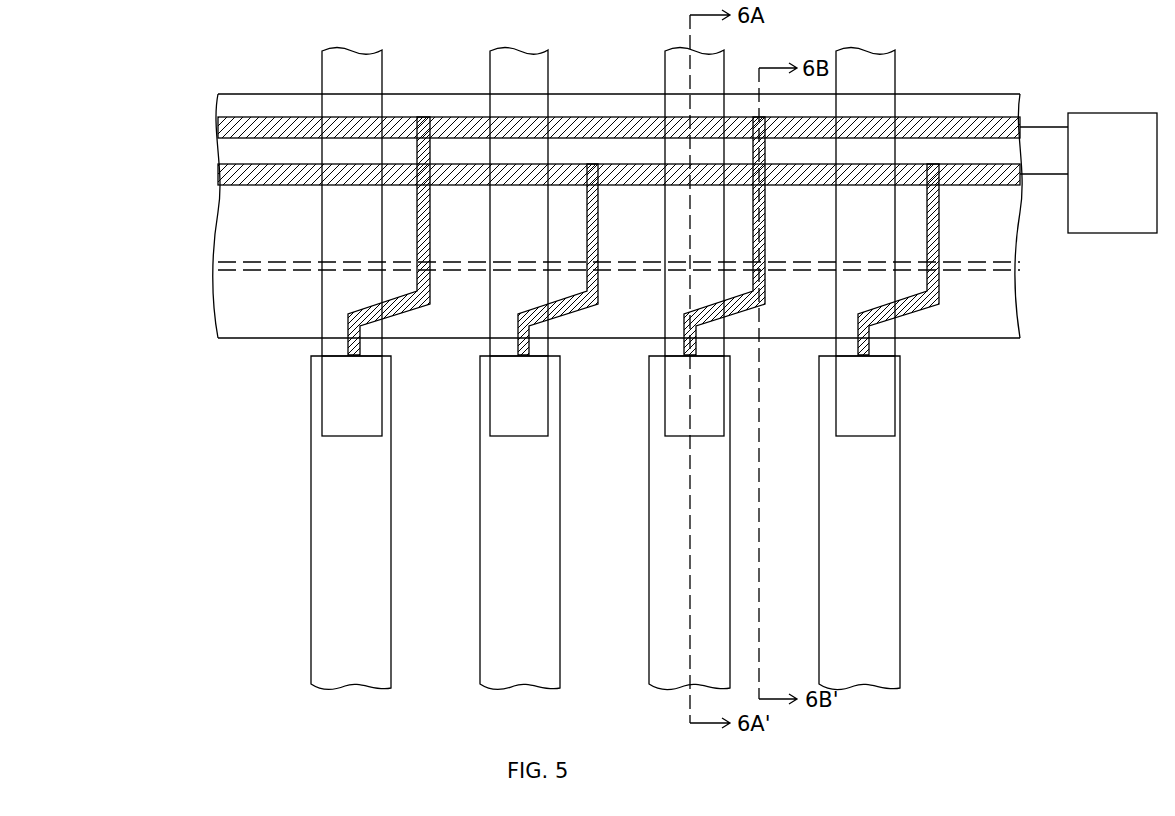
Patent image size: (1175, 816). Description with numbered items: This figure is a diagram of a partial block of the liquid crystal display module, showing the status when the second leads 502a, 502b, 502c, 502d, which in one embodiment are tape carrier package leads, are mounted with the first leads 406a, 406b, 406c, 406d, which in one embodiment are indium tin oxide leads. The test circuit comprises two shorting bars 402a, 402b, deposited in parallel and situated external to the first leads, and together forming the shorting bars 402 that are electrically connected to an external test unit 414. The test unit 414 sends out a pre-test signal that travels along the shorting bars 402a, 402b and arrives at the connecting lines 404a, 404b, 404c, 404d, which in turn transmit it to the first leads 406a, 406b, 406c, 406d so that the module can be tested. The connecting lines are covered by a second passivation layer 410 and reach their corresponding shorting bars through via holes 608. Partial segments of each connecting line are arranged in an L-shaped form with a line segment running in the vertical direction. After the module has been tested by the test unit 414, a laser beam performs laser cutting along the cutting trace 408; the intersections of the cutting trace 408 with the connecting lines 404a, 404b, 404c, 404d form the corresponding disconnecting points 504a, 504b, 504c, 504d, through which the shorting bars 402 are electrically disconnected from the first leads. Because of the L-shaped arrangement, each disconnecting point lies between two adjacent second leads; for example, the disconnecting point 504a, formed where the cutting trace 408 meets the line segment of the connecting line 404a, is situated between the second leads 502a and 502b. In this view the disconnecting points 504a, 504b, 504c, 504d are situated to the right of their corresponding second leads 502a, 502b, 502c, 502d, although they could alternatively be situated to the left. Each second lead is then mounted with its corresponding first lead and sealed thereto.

The shorting bars 402 is at (84, 114).
The shorting bar 402a is at (218, 122).
The shorting bar 402b is at (218, 168).
The connecting line 404a is at (348, 352).
The connecting line 404b is at (518, 352).
The connecting line 404c is at (684, 352).
The connecting line 404d is at (870, 351).
The first lead 406a is at (320, 638).
The first lead 406b is at (493, 631).
The first lead 406c is at (660, 633).
The first lead 406d is at (888, 640).
The cutting trace 408 is at (218, 268).
The second passivation layer 410 is at (953, 92).
The test unit 414 is at (1110, 233).
The second lead 502a is at (325, 53).
The second lead 502b is at (494, 53).
The second lead 502c is at (690, 52).
The second lead 502d is at (866, 52).
The disconnecting point 504a is at (415, 252).
The disconnecting point 504b is at (588, 262).
The disconnecting point 504c is at (766, 270).
The disconnecting point 504d is at (944, 268).
The via holes 608 is at (428, 118).